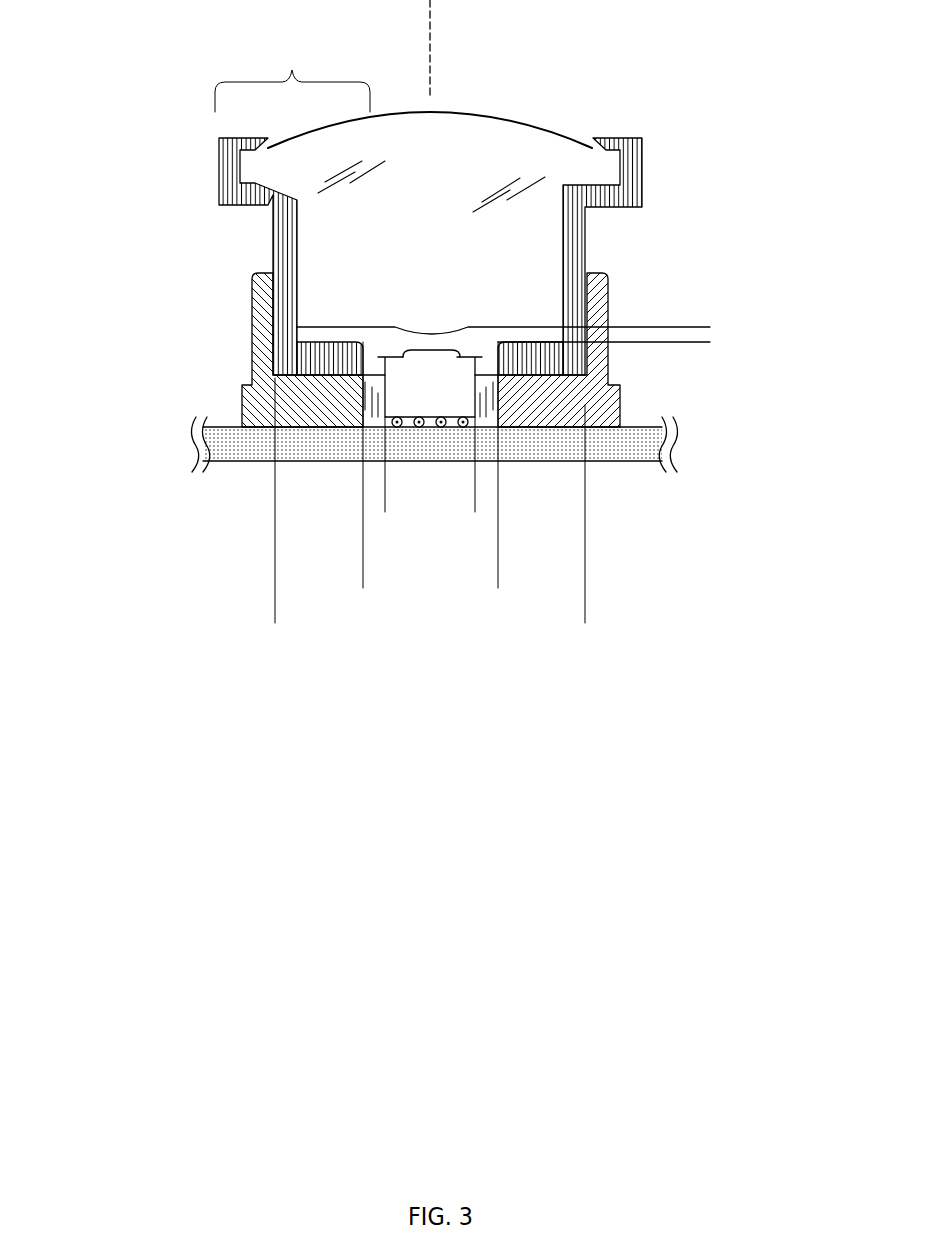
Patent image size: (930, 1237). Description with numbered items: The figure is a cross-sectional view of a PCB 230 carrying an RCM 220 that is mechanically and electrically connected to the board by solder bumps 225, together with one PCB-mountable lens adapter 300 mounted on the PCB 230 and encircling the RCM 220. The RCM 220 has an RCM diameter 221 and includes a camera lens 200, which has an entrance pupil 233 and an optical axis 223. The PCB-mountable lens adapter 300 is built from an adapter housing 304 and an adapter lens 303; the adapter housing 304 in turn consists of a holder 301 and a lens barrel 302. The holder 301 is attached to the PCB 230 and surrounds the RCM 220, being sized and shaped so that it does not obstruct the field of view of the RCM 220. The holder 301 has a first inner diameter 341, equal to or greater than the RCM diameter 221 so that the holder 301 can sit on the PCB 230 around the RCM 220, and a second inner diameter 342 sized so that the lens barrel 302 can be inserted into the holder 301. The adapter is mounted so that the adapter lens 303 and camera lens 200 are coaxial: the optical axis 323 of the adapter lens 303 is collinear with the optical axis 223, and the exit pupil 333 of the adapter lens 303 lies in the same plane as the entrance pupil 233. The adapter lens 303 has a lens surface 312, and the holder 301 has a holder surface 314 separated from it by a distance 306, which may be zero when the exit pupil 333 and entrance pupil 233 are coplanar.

The camera lens 200 is at (432, 352).
The RCM 220 is at (422, 413).
The RCM diameter 221 is at (475, 487).
The optical axis 223 is at (512, 48).
The solder bumps 225 is at (385, 422).
The PCB 230 is at (467, 454).
The entrance pupil 233 is at (436, 372).
The PCB-mountable lens adapter 300 is at (90, 122).
The holder 301 is at (252, 280).
The lens barrel 302 is at (219, 178).
The adapter lens 303 is at (445, 246).
The adapter housing 304 is at (292, 76).
The distance 306 is at (687, 305).
The lens surface 312 is at (553, 327).
The holder surface 314 is at (545, 342).
The optical axis 323 is at (430, 62).
The exit pupil 333 is at (470, 362).
The first inner diameter 341 is at (498, 565).
The second inner diameter 342 is at (585, 600).